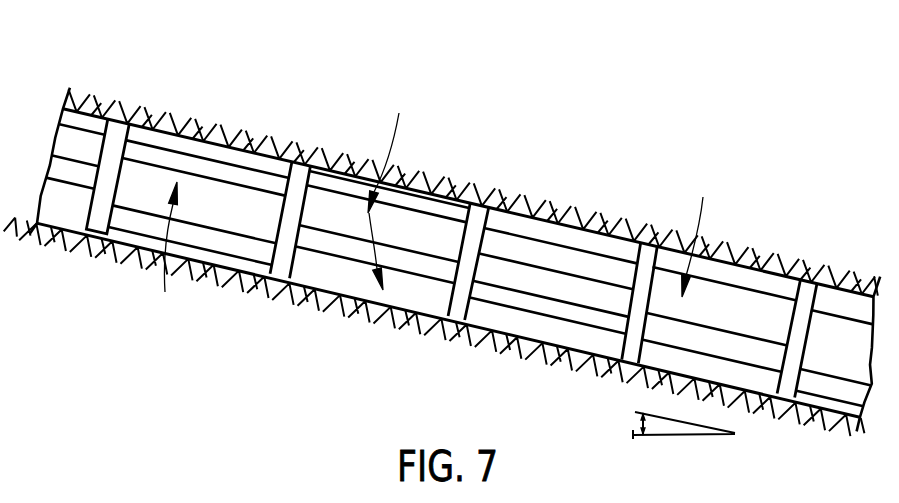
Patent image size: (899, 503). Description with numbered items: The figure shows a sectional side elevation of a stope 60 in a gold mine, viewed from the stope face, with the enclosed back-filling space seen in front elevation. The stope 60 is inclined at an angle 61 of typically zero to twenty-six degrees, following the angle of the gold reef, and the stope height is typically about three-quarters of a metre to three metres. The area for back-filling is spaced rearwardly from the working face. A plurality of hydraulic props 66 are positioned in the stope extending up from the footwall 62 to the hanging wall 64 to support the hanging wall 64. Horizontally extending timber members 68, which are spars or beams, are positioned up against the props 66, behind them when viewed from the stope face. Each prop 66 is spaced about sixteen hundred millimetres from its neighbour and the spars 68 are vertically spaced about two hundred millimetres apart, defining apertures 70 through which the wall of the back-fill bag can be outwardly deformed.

The stope 60 is at (209, 78).
The angle 61 is at (637, 422).
The footwall 62 is at (506, 337).
The hanging wall 64 is at (525, 208).
The hydraulic props 66 is at (297, 170).
The timber members 68 is at (210, 240).
The apertures 70 is at (434, 203).